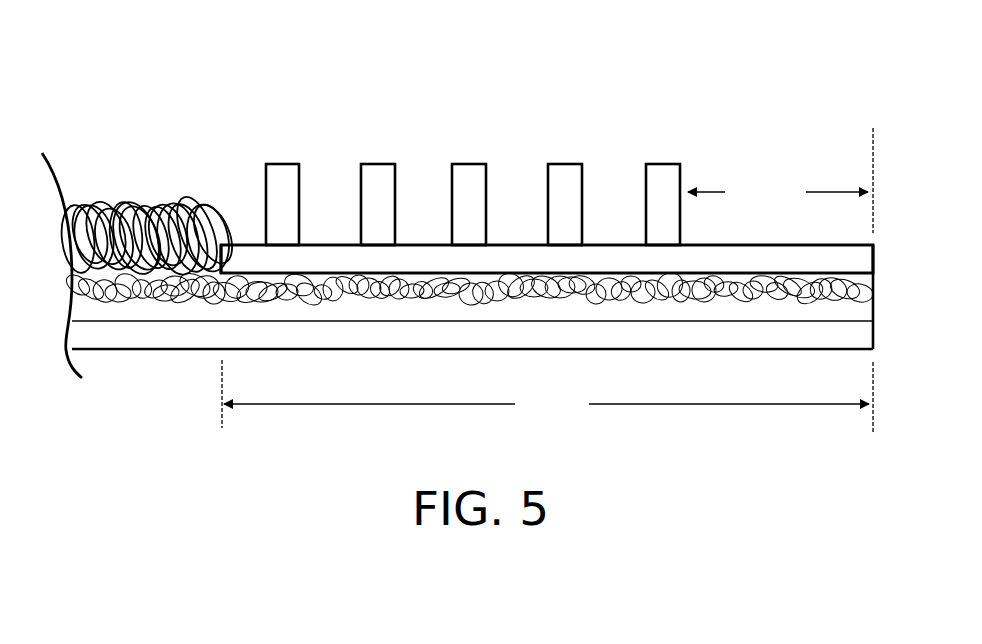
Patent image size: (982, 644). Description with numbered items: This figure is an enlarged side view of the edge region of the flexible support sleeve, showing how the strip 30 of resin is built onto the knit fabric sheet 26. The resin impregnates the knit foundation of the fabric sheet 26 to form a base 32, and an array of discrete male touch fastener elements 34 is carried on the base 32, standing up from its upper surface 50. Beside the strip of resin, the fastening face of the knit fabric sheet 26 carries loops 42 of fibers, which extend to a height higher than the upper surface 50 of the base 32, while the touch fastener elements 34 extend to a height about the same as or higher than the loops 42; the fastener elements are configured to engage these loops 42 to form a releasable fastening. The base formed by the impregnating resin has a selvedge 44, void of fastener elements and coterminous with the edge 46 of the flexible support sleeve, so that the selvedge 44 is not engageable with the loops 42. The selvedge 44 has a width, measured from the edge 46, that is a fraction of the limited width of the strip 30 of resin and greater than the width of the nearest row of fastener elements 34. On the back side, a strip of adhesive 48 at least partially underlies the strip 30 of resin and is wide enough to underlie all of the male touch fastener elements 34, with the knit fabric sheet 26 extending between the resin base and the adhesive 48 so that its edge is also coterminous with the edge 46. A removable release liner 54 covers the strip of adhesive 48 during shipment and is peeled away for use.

The strip of resin 30 is at (262, 106).
The base 32 is at (512, 245).
The male touch fastener elements 34 is at (382, 164).
The loops 42 is at (138, 205).
The selvedge 44 is at (776, 157).
The edge of the flexible support sleeve 46 is at (876, 307).
The strip of adhesive 48 is at (777, 321).
The upper surface of the base 50 is at (248, 245).
The removable release liner 54 is at (170, 350).
The knit fabric sheet 26 is at (132, 293).